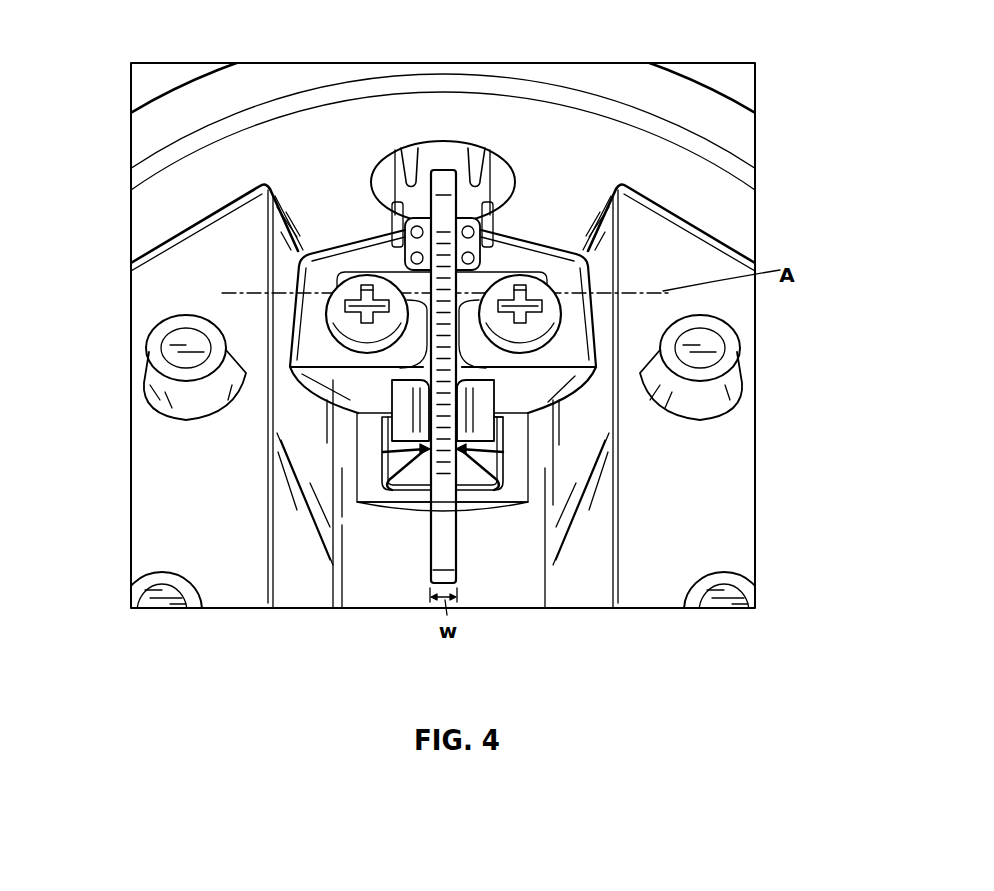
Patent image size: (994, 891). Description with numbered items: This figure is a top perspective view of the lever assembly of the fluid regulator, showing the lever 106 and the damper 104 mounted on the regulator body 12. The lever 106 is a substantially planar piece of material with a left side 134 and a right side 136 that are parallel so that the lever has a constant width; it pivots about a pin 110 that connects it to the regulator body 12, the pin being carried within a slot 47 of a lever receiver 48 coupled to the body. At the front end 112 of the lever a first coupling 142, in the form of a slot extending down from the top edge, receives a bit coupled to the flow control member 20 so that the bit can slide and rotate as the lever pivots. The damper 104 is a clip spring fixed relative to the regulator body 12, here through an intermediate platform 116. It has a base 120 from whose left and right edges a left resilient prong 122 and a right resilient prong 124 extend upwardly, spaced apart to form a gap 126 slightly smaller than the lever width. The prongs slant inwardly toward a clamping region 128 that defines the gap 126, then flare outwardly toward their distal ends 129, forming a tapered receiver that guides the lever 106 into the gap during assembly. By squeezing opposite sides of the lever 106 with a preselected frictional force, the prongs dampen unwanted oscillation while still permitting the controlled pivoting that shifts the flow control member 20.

The regulator body 12 is at (757, 226).
The flow control member 20 is at (413, 170).
The slot 47 is at (497, 272).
The lever receiver 48 is at (495, 243).
The lever 106 is at (430, 372).
The pin 110 is at (493, 280).
The front end 112 is at (440, 168).
The first coupling 142 is at (443, 207).
The left side 134 is at (428, 337).
The right side 136 is at (458, 342).
The damper 104 is at (382, 447).
The platform 116 is at (357, 485).
The base 120 is at (418, 492).
The left resilient prong 122 is at (400, 481).
The right resilient prong 124 is at (477, 481).
The gap 126 is at (476, 451).
The clamping region 128 is at (497, 421).
The distal ends 129 is at (392, 400).